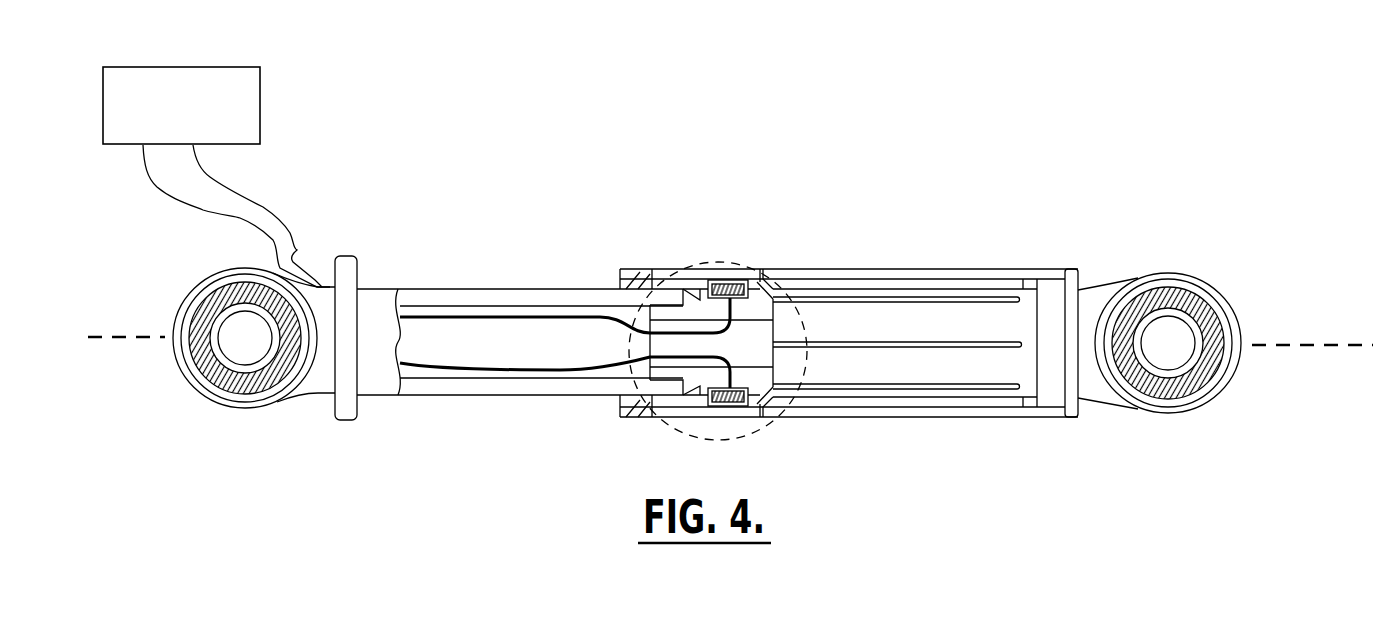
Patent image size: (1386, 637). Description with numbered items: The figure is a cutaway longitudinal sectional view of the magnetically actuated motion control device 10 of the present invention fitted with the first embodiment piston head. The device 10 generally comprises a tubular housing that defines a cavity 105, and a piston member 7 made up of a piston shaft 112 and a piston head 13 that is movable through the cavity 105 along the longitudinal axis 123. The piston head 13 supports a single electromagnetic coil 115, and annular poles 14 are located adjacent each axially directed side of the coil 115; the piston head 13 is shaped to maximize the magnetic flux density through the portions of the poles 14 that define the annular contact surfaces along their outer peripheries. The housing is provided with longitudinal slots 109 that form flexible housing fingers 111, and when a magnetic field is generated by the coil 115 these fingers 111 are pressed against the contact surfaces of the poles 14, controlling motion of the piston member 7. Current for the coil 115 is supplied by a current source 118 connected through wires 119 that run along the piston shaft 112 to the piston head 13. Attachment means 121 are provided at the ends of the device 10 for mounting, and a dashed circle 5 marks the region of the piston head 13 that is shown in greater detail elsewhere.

The magnetically actuated device 10 is at (936, 307).
The detail region 5 is at (727, 260).
The piston member 7 is at (568, 390).
The piston head 13 is at (685, 398).
The annular poles 14 is at (698, 292).
The cavity 105 is at (625, 279).
The longitudinal slots 109 is at (983, 340).
The fingers 111 is at (865, 284).
The piston shaft 112 is at (480, 292).
The coil 115 is at (720, 280).
The current source 118 is at (260, 97).
The wires 119 is at (267, 204).
The attachment means 121 is at (283, 397).
The longitudinal axis 123 is at (1313, 342).